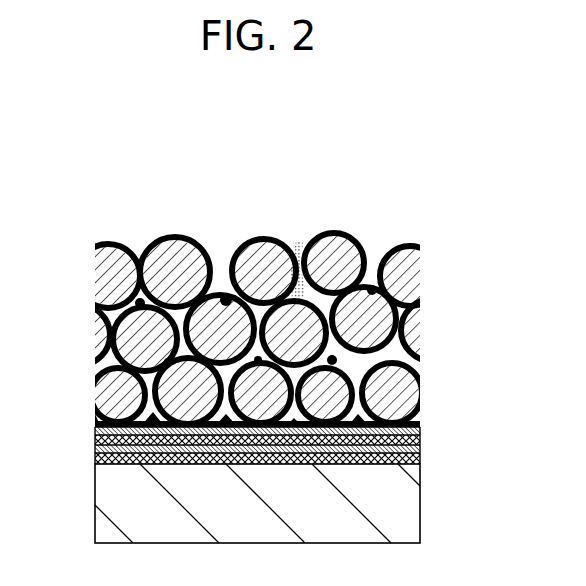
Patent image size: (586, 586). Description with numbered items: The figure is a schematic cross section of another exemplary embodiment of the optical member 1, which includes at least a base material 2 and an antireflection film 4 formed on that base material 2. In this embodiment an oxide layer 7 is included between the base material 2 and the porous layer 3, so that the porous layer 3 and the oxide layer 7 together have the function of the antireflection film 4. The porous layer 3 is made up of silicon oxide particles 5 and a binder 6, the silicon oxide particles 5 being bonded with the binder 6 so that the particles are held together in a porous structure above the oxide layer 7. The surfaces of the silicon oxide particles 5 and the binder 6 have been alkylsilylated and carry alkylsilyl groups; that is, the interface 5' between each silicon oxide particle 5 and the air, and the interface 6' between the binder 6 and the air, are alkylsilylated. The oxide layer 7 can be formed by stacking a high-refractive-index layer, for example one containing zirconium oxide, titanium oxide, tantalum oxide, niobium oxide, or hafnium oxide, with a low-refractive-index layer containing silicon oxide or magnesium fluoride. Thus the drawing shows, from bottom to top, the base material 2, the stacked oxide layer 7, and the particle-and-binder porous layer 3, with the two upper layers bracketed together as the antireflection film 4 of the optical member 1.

The optical member 1 is at (268, 122).
The base material 2 is at (412, 502).
The porous layer 3 is at (267, 288).
The antireflection film 4 is at (498, 240).
The silicon oxide particle 5 is at (433, 276).
The interface between silicon oxide particle and air 5' is at (175, 228).
The binder 6 is at (290, 356).
The interface between binder and air 6' is at (300, 234).
The oxide layer 7 is at (83, 430).